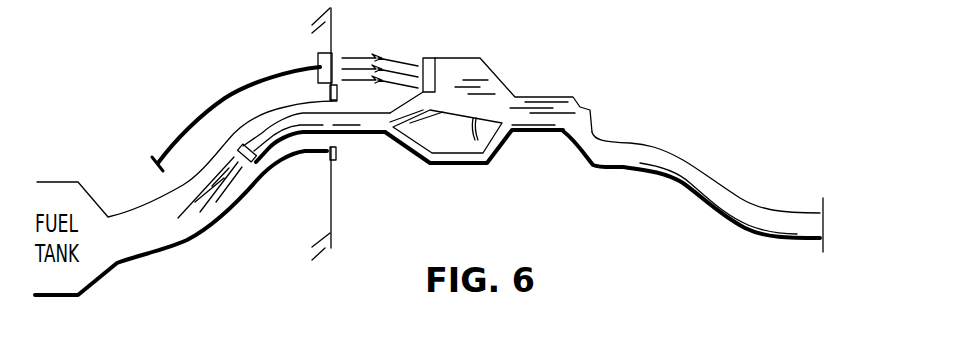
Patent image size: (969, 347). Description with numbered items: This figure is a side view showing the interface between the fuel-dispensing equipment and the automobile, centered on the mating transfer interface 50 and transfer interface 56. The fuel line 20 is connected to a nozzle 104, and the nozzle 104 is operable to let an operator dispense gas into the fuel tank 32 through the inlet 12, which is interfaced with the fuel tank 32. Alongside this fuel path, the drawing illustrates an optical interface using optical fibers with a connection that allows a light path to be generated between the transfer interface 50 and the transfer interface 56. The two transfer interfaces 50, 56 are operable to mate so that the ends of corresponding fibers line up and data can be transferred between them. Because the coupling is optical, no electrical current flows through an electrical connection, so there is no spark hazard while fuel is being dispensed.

The inlet 12 is at (337, 155).
The fuel line 20 is at (690, 167).
The fuel tank 32 is at (80, 243).
The transfer interface 50 is at (323, 60).
The transfer interface 56 is at (435, 78).
The nozzle 104 is at (543, 103).